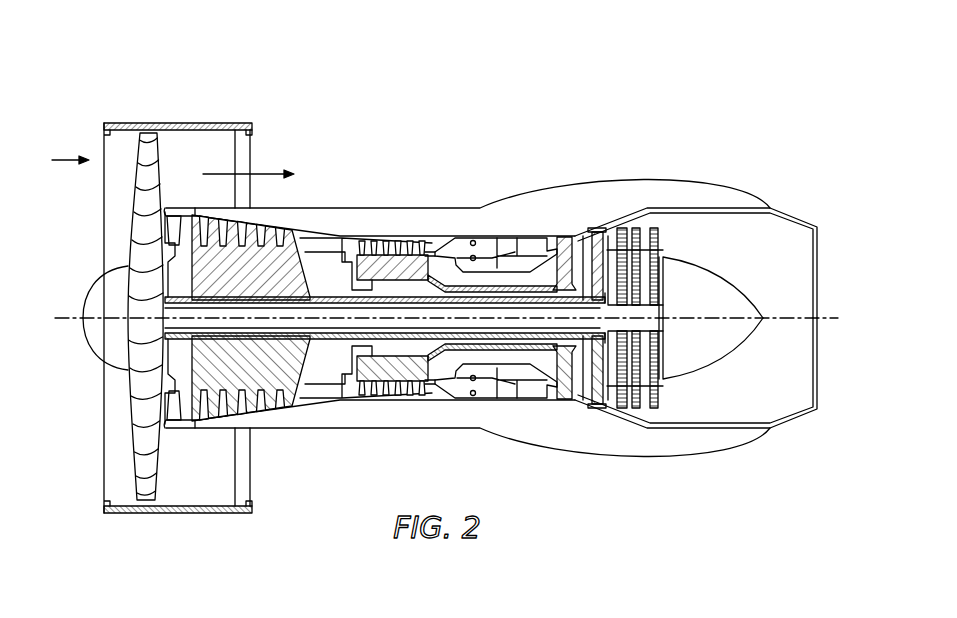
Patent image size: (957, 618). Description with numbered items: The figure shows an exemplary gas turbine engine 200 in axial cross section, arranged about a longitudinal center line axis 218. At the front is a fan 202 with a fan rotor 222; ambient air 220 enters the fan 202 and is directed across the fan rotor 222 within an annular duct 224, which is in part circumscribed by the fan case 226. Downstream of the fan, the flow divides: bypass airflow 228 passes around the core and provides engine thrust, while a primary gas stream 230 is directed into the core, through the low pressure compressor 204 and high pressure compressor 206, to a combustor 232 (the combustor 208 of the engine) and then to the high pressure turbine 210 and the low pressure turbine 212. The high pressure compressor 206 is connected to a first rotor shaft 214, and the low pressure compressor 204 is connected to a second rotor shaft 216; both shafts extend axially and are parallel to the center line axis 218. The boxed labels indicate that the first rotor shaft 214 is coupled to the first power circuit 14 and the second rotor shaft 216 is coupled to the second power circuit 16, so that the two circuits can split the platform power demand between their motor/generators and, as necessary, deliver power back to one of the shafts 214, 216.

The gas turbine engine 200 is at (454, 304).
The fan 202 is at (111, 353).
The low pressure compressor 204 is at (272, 263).
The high pressure compressor 206 is at (398, 393).
The combustor 208 is at (482, 398).
The high pressure turbine 210 is at (578, 250).
The low pressure turbine 212 is at (657, 223).
The first rotor shaft 214 is at (502, 353).
The second rotor shaft 216 is at (653, 319).
The longitudinal center line axis 218 is at (832, 316).
The ambient air 220 is at (70, 158).
The fan rotor 222 is at (147, 491).
The annular duct 224 is at (238, 477).
The fan case 226 is at (193, 511).
The bypass airflow 228 is at (277, 172).
The primary gas stream 230 is at (353, 243).
The combustor 232 is at (491, 314).
The first power circuit 14 is at (537, 280).
The second power circuit 16 is at (583, 222).